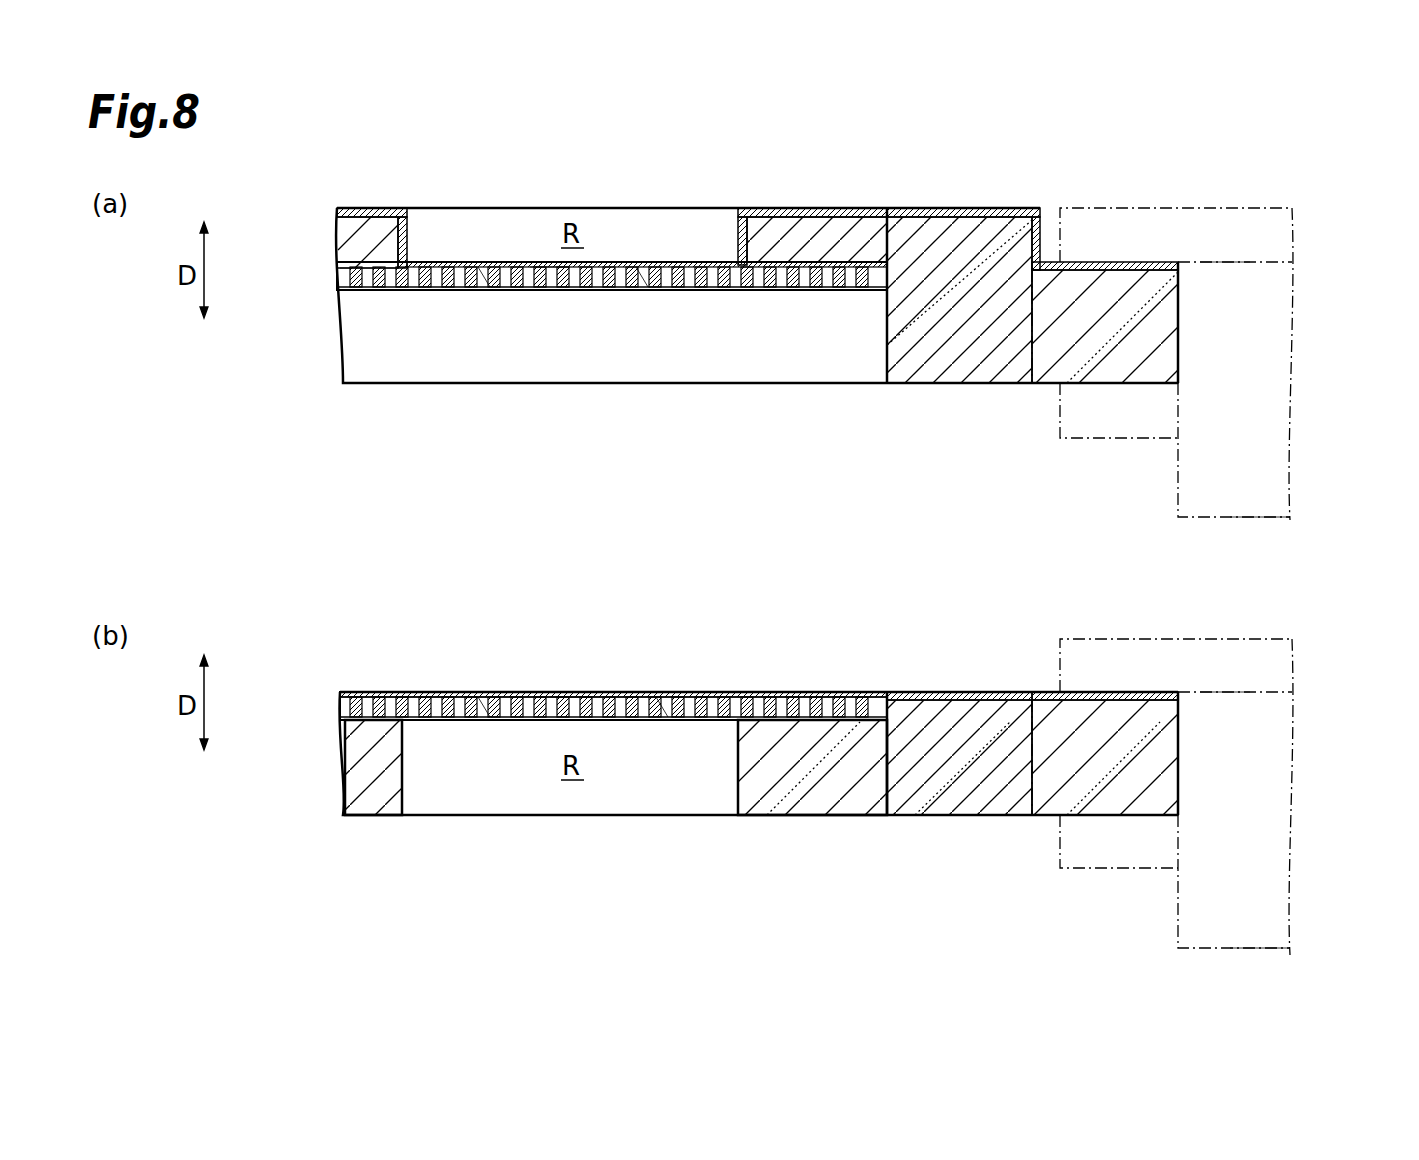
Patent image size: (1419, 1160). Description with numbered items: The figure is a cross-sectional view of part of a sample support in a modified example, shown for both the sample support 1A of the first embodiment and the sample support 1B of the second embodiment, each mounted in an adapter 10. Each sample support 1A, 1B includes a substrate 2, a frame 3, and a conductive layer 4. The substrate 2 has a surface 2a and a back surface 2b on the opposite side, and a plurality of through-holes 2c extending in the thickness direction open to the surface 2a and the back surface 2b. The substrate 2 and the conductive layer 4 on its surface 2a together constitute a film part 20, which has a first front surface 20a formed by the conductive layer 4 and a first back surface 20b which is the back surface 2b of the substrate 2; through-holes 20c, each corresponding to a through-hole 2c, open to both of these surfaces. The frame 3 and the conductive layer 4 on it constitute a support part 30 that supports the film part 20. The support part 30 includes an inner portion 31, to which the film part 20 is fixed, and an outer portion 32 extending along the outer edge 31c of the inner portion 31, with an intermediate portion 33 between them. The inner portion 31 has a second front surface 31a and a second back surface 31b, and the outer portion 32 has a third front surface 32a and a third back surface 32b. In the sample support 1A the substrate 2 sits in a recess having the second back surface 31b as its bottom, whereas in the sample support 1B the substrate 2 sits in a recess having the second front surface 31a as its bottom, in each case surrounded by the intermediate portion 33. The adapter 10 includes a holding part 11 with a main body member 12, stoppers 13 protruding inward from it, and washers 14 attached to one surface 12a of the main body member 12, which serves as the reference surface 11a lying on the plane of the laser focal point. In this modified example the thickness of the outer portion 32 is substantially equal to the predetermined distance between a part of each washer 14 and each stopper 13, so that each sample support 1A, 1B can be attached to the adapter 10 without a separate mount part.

The sample support 1A is at (965, 208).
The sample support 1B is at (965, 692).
The substrate 2 is at (352, 280).
The surface 2a is at (365, 267).
The back surface 2b is at (362, 290).
The through-holes 2c is at (484, 287).
The frame 3 is at (915, 370).
The conductive layer 4 is at (371, 210).
The adapter 10 is at (1258, 517).
The holding part 11 is at (1215, 517).
The reference surface 11a is at (1225, 477).
The main body member 12 is at (1290, 372).
The surface 12a is at (1262, 260).
The stoppers 13 is at (1105, 438).
The washers 14 is at (1258, 207).
The film part 20 is at (641, 262).
The first front surface 20a is at (478, 262).
The first back surface 20b is at (458, 290).
The through-holes 20c is at (548, 290).
The support part 30 is at (995, 384).
The inner portion 31 is at (820, 215).
The second front surface 31a is at (781, 208).
The second back surface 31b is at (826, 290).
The outer edge 31c is at (902, 262).
The outer portion 32 is at (1165, 345).
The third front surface 32a is at (1118, 262).
The third back surface 32b is at (1133, 383).
The intermediate portion 33 is at (961, 384).